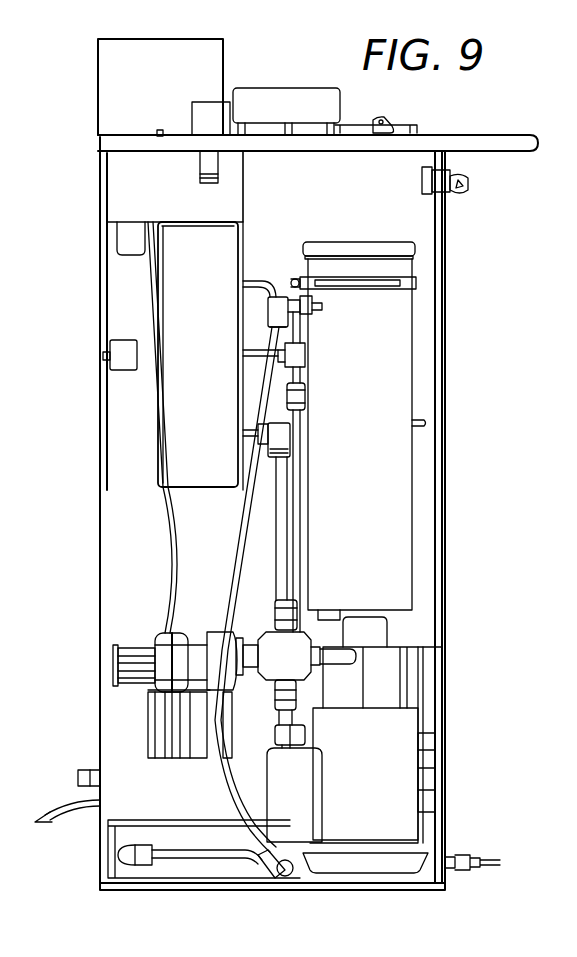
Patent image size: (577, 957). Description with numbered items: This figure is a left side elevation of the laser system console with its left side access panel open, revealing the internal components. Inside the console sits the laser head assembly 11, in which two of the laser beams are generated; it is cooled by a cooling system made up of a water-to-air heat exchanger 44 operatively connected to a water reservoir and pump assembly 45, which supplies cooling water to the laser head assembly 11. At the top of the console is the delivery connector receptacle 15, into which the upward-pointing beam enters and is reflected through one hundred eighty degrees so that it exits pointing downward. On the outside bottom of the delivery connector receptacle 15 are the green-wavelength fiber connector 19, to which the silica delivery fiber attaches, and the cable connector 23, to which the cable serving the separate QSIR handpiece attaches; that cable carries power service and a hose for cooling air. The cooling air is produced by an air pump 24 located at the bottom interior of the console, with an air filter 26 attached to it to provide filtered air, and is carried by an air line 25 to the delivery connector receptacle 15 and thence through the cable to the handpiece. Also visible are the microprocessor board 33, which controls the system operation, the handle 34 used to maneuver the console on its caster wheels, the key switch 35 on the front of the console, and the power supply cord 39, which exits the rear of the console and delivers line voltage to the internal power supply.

The laser head assembly 11 is at (162, 433).
The delivery connector receptacle 15 is at (100, 95).
The 532 nm connector 19 is at (158, 136).
The cable connector 23 is at (200, 165).
The air pump 24 is at (148, 720).
The air line 25 is at (175, 548).
The air filter 26 is at (113, 663).
The microprocessor board 33 is at (400, 117).
The handle 34 is at (536, 150).
The key switch 35 is at (468, 184).
The power supply cord 39 is at (62, 803).
The water-to-air heat exchanger 44 is at (160, 870).
The water reservoir and pump assembly 45 is at (405, 517).